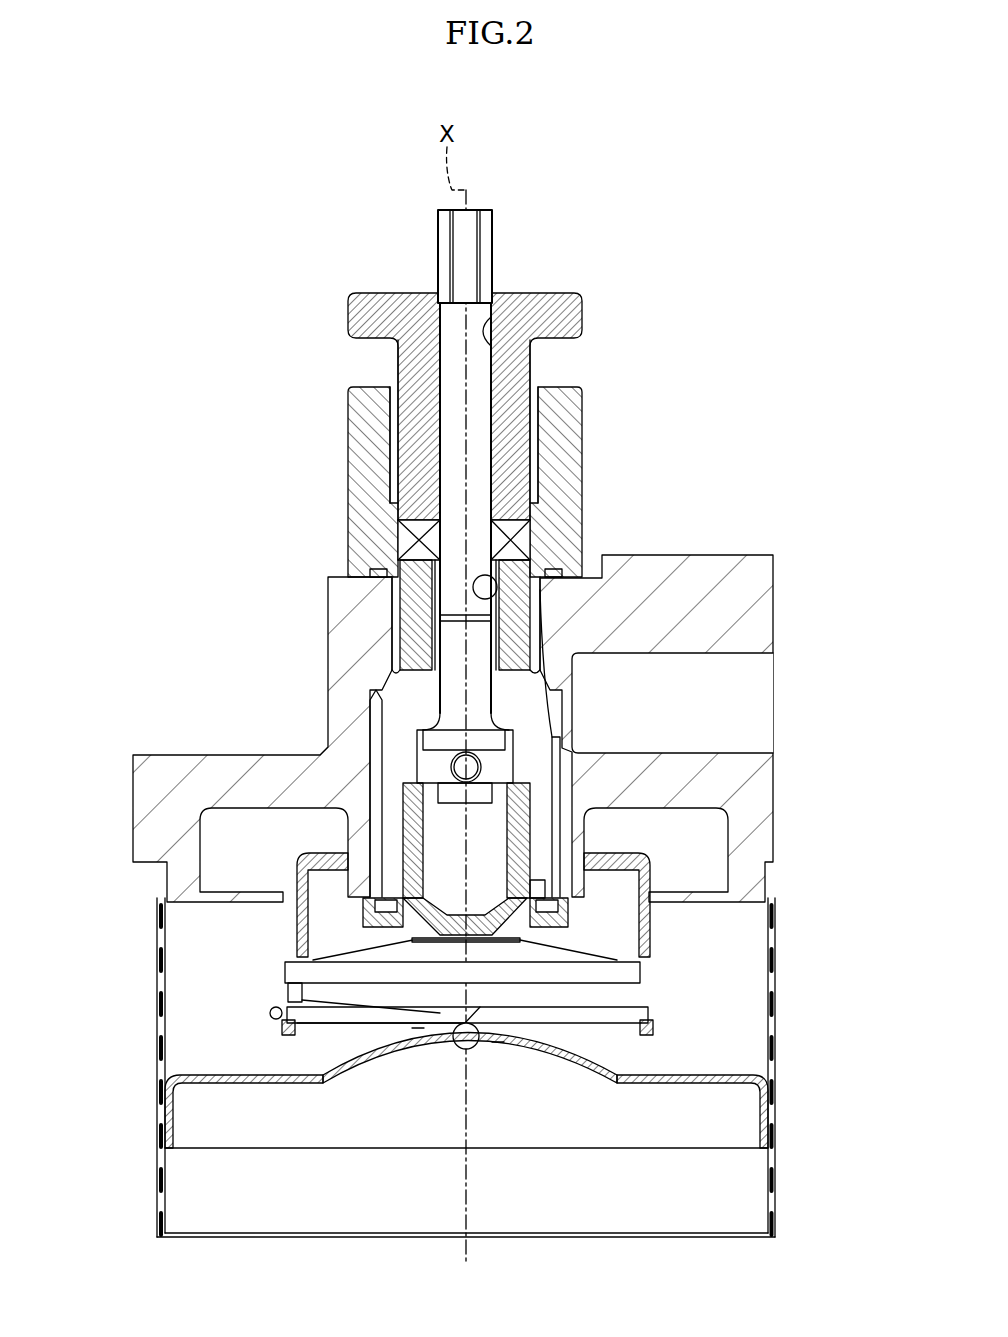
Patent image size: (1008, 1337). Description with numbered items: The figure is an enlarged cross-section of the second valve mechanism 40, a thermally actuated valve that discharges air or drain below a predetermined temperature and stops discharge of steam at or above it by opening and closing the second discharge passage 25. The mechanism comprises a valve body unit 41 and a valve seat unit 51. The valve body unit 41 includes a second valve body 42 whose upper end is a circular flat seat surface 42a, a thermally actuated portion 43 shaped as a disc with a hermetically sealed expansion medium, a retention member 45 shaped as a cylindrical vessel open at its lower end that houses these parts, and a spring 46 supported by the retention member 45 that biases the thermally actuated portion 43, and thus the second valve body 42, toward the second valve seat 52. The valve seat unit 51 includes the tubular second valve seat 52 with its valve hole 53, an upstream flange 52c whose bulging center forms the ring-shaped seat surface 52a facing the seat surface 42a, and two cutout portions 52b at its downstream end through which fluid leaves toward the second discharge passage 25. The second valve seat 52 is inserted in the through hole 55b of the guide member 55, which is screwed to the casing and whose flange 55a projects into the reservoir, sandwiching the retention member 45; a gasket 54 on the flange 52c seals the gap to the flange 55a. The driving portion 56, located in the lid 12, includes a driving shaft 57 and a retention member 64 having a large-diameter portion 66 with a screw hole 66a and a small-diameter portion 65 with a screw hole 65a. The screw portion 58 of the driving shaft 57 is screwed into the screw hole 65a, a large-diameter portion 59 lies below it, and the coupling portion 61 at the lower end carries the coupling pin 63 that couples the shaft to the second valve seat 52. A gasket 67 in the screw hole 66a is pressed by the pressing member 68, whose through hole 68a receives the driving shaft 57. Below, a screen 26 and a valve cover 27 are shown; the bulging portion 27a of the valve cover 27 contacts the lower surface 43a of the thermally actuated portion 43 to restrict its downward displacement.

The second valve mechanism 40 is at (258, 290).
The lid 12 is at (160, 790).
The coupling pin 63 is at (640, 622).
The second discharge passage 25 is at (715, 676).
The cutout portions 52b is at (556, 745).
The pressing member 68 is at (415, 296).
The through hole 68a is at (490, 340).
The driving shaft 57 is at (470, 232).
The large-diameter portion 66 is at (362, 483).
The screw hole 66a is at (400, 412).
The driving portion 56 is at (585, 410).
The valve seat unit 51 is at (606, 493).
The gasket 67 is at (420, 540).
The retention member 64 is at (560, 533).
The screw hole 65a is at (497, 580).
The screw portion 58 is at (430, 615).
The small-diameter portion 65 is at (452, 632).
The large-diameter portion 59 is at (443, 735).
The coupling portion 61 is at (452, 764).
The through hole 55b is at (418, 776).
The valve hole 53 is at (430, 792).
The second valve seat 52 is at (560, 790).
The seat surface 52a is at (560, 915).
The flange 52c is at (575, 890).
The gasket 54 is at (370, 912).
The guide member 55 is at (298, 864).
The flange 55a is at (600, 862).
The seat surface 42a is at (575, 942).
The second valve body 42 is at (298, 972).
The thermally actuated portion 43 is at (285, 1005).
The retention member 45 is at (642, 1020).
The spring 46 is at (482, 1040).
The valve body unit 41 is at (690, 1000).
The valve cover 27 is at (205, 1080).
The screen 26 is at (160, 1040).
The lower surface 43a is at (418, 1030).
The bulging portion 27a is at (498, 1042).